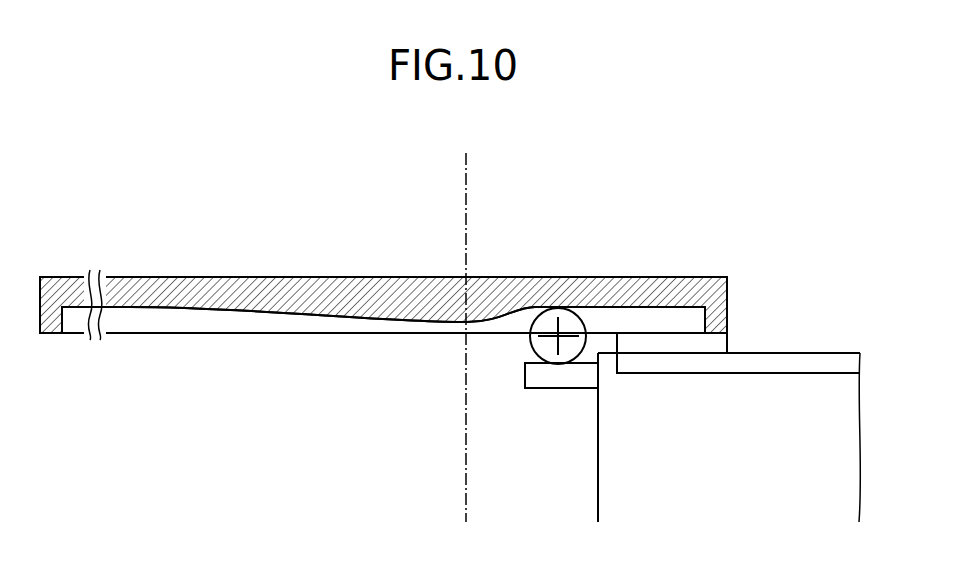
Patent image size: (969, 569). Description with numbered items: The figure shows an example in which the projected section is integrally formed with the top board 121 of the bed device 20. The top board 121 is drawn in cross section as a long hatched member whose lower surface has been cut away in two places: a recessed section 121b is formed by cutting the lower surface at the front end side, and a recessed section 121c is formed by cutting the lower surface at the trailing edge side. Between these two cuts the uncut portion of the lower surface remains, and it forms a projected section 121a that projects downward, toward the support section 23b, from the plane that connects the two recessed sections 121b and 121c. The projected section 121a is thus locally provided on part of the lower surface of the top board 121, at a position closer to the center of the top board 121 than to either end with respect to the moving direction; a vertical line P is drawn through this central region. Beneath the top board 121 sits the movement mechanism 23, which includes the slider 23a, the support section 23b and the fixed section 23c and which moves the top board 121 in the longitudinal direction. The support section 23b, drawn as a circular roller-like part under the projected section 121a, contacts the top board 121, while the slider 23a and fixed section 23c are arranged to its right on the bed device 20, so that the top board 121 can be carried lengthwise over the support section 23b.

The top board 121 is at (428, 277).
The projected section 121a is at (423, 331).
The recessed section 121b is at (167, 322).
The recessed section 121c is at (657, 324).
The center line / pivot axis P is at (467, 218).
The movement mechanism 23 is at (674, 378).
The slider 23a is at (814, 353).
The support section 23b is at (530, 340).
The fixed section 23c is at (727, 343).
The bed device 20 is at (598, 505).